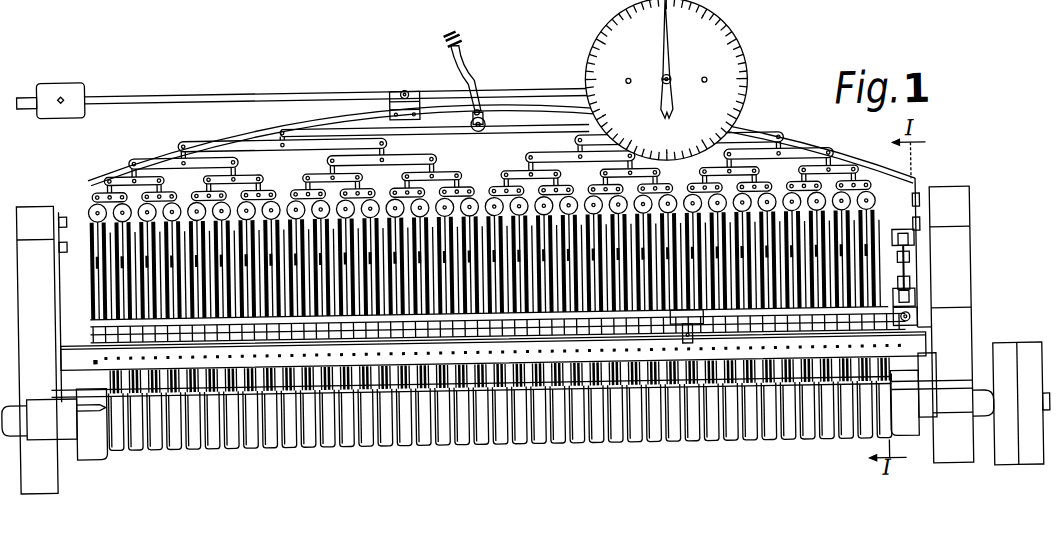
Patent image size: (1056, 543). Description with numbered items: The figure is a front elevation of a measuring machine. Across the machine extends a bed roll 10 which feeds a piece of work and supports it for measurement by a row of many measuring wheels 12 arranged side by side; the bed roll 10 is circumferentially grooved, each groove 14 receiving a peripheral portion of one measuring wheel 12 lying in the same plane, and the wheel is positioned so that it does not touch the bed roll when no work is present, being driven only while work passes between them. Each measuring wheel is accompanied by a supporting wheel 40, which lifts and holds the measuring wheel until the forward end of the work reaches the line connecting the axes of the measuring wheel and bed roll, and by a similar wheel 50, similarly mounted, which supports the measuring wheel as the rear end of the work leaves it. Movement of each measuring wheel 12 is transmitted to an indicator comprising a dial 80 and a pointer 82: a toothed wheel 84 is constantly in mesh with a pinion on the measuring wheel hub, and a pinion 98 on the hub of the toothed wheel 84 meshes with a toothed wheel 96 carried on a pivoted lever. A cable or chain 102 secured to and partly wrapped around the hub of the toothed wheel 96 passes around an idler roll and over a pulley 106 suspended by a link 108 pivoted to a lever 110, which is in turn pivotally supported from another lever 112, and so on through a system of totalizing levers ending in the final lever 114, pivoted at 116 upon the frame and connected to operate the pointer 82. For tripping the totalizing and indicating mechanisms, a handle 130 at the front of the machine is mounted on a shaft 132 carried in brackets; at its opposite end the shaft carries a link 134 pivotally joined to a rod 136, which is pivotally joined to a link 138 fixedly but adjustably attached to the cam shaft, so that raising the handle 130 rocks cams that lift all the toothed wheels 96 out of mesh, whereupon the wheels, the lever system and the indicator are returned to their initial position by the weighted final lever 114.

The bed roll 10 is at (95, 445).
The measuring wheel 12 is at (113, 374).
The groove 14 is at (133, 444).
The supporting wheel 40 is at (97, 383).
The supporting wheel 50 is at (108, 388).
The dial 80 is at (731, 27).
The pointer 82 is at (672, 51).
The toothed wheel 84 is at (100, 306).
The toothed wheel 96 is at (97, 246).
The pinion 98 is at (97, 290).
The cable or chain 102 is at (92, 218).
The pulley 106 is at (94, 203).
The link 108 is at (96, 201).
The lever 110 is at (98, 200).
The lever 112 is at (120, 186).
The final lever 114 is at (524, 90).
The pivot 116 is at (407, 90).
The handle 130 is at (682, 327).
The shaft 132 is at (802, 317).
The link 134 is at (912, 304).
The rod 136 is at (906, 270).
The link 138 is at (911, 245).